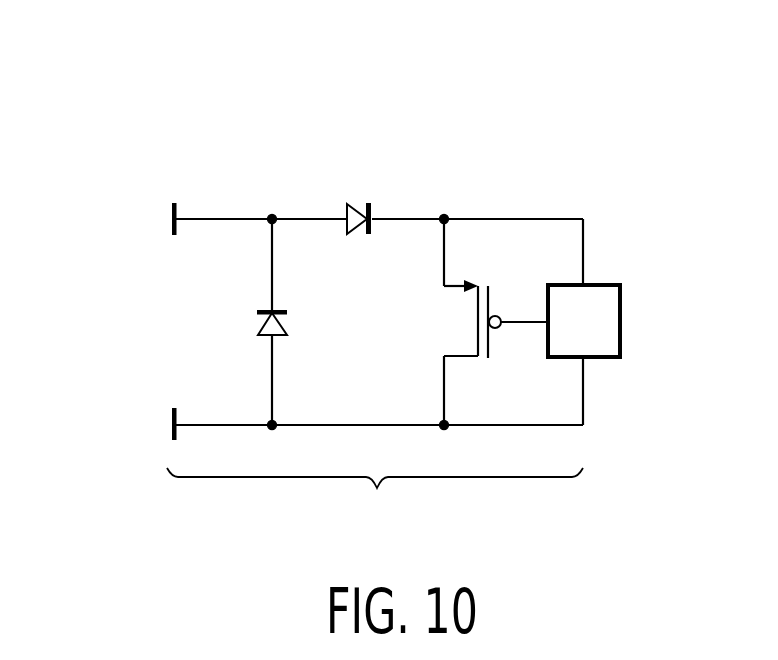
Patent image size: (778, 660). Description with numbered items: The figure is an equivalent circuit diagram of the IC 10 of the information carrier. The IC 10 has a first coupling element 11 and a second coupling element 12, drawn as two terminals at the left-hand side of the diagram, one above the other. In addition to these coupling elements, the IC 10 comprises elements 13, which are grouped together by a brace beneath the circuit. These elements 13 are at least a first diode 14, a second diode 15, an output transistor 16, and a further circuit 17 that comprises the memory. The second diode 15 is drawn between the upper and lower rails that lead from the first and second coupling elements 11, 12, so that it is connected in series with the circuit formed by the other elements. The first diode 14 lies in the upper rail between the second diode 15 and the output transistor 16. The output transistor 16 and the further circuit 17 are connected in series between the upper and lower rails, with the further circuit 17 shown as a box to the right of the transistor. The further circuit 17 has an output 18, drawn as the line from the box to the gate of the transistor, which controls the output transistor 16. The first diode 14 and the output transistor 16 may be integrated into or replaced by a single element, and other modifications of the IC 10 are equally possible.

The IC 10 is at (430, 144).
The first coupling element 11 is at (167, 213).
The second coupling element 12 is at (167, 418).
The elements 13 is at (364, 527).
The first diode 14 is at (357, 203).
The second diode 15 is at (258, 325).
The output transistor 16 is at (458, 322).
The further circuit 17 is at (620, 317).
The output 18 is at (520, 325).